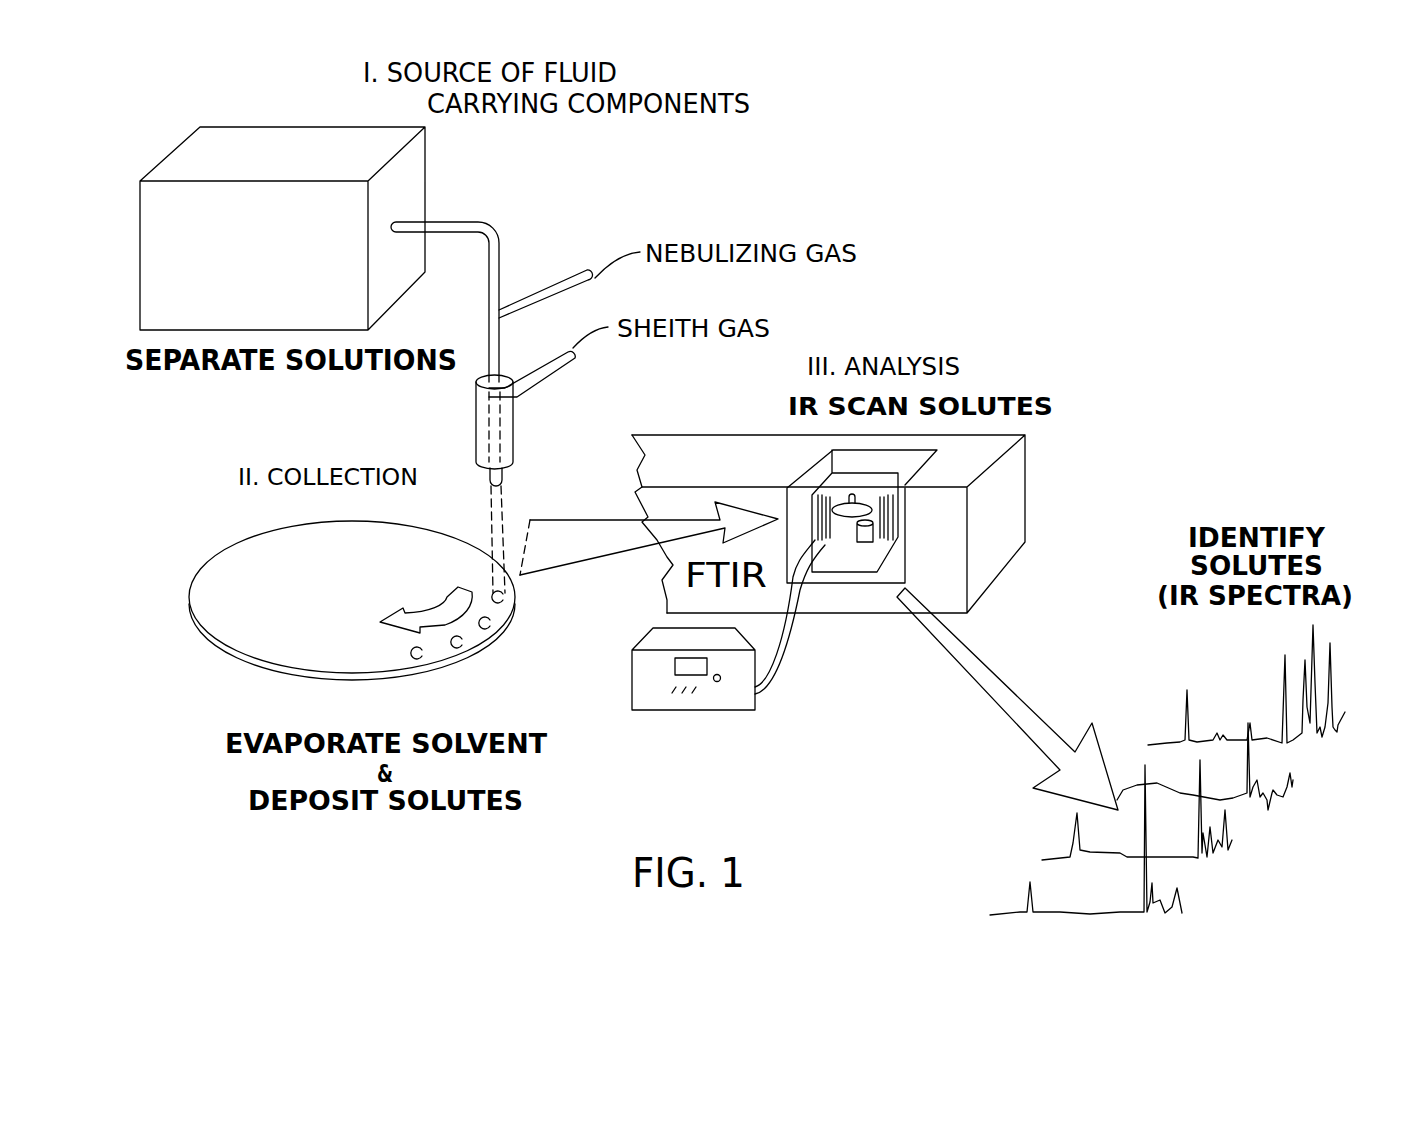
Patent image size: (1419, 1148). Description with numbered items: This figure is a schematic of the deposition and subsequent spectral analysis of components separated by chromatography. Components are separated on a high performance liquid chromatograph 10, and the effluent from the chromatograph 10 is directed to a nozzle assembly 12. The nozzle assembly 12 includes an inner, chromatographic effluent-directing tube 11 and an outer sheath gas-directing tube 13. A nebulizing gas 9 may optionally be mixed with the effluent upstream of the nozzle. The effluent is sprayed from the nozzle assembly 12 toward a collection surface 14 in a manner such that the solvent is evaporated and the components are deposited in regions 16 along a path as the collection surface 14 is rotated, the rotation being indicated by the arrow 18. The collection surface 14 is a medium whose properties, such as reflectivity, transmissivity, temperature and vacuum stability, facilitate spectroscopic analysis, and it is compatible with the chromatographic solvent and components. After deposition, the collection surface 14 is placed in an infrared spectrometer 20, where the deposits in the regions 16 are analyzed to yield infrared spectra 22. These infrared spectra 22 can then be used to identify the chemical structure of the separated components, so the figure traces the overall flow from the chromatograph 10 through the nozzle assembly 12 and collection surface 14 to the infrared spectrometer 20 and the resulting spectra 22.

The nebulizing gas 9 is at (523, 293).
The high performance liquid chromatograph 10 is at (410, 183).
The chromatographic effluent-directing tube 11 is at (483, 453).
The nozzle assembly 12 is at (528, 417).
The sheath gas-directing tube 13 is at (515, 438).
The collection surface 14 is at (313, 600).
The regions 16 is at (422, 657).
The arrow 18 is at (450, 597).
The infrared spectrometer 20 is at (1007, 497).
The infrared spectra 22 is at (1345, 653).